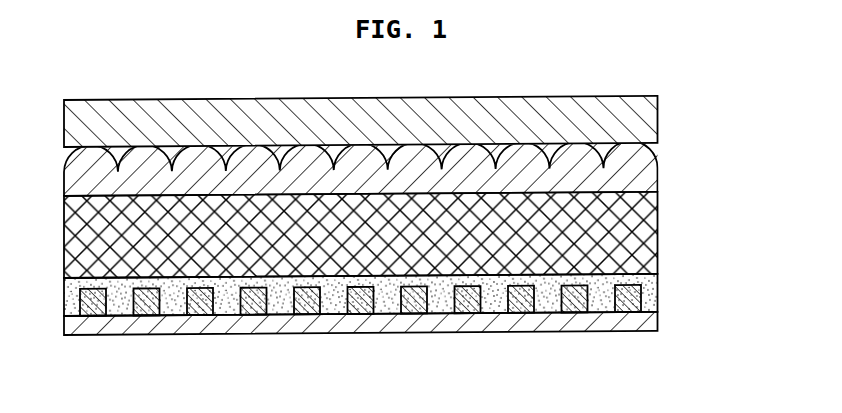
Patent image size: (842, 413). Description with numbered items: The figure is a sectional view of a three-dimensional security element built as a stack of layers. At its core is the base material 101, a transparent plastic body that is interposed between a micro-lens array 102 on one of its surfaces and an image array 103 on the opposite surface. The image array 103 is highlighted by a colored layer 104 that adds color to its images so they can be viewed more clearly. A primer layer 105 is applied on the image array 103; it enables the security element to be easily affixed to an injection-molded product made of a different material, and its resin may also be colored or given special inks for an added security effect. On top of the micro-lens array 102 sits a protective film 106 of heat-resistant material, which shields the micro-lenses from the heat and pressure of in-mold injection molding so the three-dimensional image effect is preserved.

The base material 101 is at (648, 239).
The micro-lens array 102 is at (647, 173).
The image array 103 is at (650, 283).
The colored layer 104 is at (572, 313).
The primer layer 105 is at (645, 332).
The protective film 106 is at (650, 123).